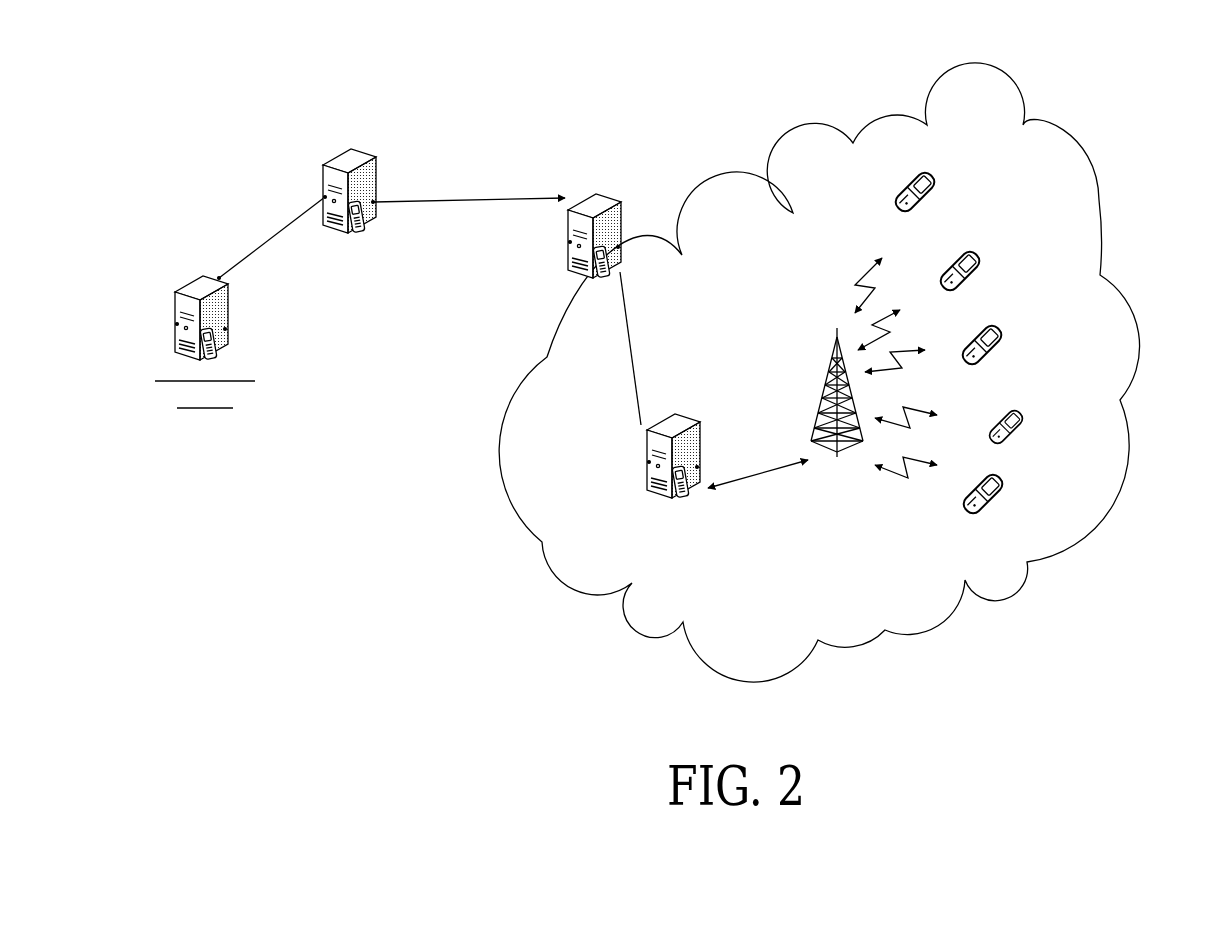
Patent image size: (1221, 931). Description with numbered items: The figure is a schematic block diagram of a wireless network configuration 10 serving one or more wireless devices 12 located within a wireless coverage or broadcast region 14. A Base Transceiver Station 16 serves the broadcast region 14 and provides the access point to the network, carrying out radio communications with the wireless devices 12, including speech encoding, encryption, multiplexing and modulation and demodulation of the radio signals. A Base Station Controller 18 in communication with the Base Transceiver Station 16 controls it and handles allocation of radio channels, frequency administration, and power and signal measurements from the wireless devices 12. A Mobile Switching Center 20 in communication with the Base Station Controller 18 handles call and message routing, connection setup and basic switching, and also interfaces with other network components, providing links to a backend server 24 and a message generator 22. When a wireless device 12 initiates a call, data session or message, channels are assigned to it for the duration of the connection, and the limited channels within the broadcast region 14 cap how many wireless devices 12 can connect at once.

The wireless network configuration 10 is at (430, 475).
The wireless device 12 is at (975, 247).
The broadcast region 14 is at (1182, 177).
The Base Transceiver Station (BTS) 16 is at (822, 383).
The Base Station Controller (BSC) 18 is at (685, 425).
The Mobile Switching Center (MSC) 20 is at (613, 205).
The message generator 22 is at (348, 152).
The backend server 24 is at (175, 290).